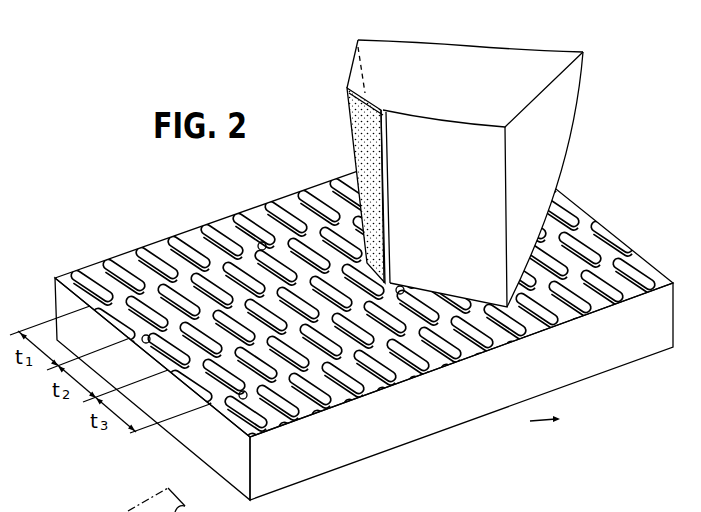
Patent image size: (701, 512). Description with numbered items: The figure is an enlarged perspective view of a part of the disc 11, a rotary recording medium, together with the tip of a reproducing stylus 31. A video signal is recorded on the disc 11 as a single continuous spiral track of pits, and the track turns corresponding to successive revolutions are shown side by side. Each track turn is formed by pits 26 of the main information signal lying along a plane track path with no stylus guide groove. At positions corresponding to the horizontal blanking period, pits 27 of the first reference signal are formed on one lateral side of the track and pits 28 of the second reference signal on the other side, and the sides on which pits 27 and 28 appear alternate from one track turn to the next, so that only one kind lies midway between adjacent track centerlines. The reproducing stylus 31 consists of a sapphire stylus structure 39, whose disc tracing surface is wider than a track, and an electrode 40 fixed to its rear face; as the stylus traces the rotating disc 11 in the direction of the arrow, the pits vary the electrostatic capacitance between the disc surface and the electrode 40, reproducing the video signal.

The disc 11 is at (130, 246).
The pits 26 is at (208, 232).
The pits of the first reference signal 27 is at (262, 243).
The pits of the second reference signal 28 is at (146, 340).
The reproducing stylus 31 is at (345, 77).
The stylus structure 39 is at (564, 132).
The electrode 40 is at (350, 128).